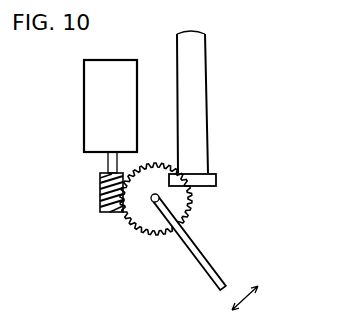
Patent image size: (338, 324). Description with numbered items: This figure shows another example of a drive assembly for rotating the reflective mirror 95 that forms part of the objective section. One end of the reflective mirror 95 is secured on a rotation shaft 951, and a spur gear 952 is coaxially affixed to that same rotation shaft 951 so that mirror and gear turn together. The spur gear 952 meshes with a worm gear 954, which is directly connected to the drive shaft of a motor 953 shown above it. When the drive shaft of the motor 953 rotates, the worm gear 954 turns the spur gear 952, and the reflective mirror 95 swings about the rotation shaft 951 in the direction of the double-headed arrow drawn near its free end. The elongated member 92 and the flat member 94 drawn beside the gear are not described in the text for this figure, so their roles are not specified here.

The rod 92 is at (193, 82).
The plate 94 is at (216, 177).
The reflective mirror 95 is at (213, 270).
The rotation shaft 951 is at (155, 203).
The spur gear 952 is at (179, 204).
The motor 953 is at (93, 132).
The worm gear 954 is at (110, 214).